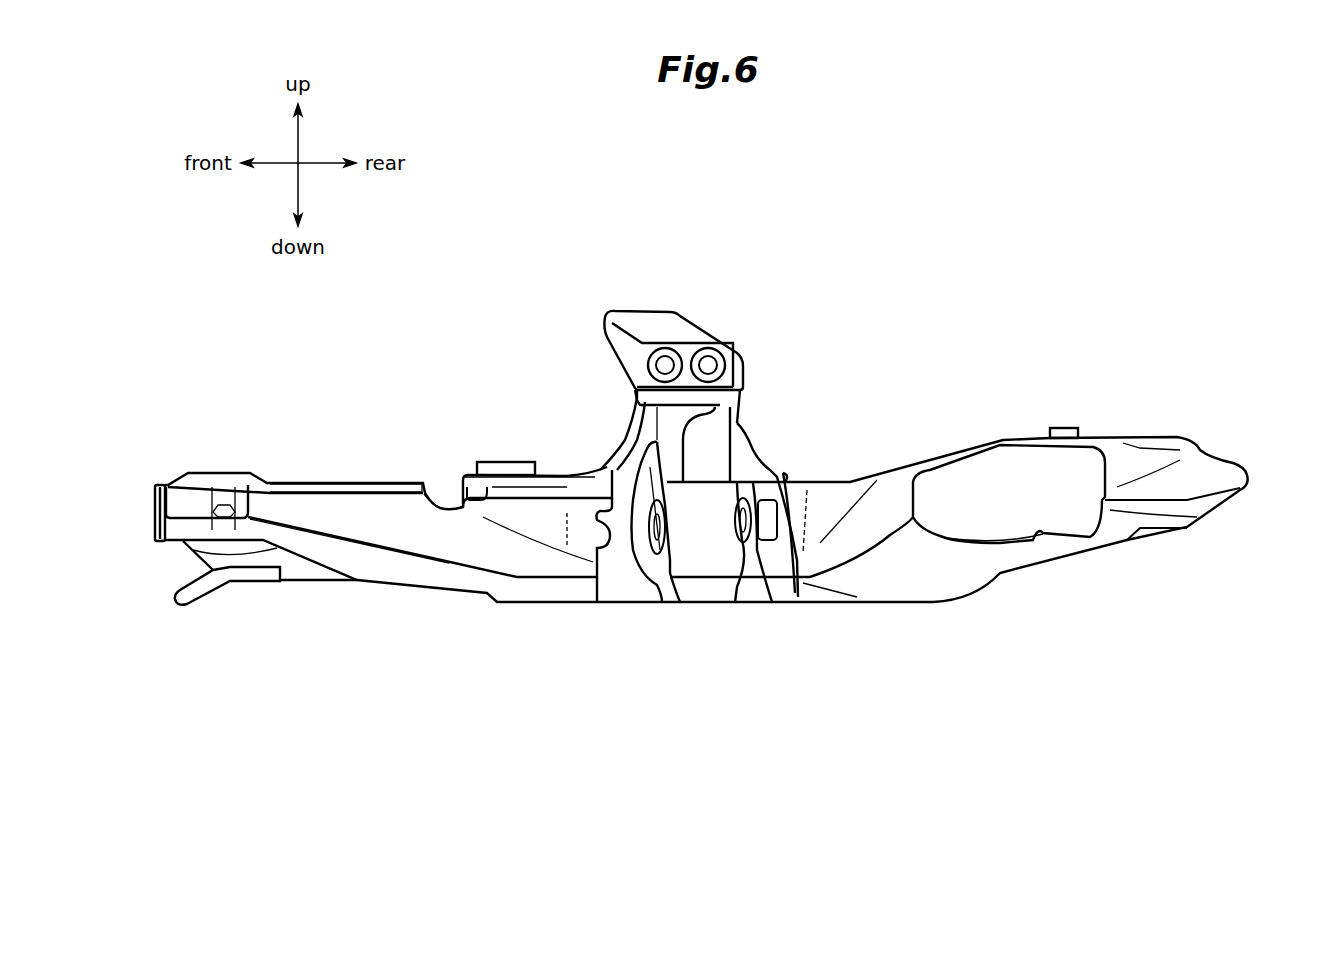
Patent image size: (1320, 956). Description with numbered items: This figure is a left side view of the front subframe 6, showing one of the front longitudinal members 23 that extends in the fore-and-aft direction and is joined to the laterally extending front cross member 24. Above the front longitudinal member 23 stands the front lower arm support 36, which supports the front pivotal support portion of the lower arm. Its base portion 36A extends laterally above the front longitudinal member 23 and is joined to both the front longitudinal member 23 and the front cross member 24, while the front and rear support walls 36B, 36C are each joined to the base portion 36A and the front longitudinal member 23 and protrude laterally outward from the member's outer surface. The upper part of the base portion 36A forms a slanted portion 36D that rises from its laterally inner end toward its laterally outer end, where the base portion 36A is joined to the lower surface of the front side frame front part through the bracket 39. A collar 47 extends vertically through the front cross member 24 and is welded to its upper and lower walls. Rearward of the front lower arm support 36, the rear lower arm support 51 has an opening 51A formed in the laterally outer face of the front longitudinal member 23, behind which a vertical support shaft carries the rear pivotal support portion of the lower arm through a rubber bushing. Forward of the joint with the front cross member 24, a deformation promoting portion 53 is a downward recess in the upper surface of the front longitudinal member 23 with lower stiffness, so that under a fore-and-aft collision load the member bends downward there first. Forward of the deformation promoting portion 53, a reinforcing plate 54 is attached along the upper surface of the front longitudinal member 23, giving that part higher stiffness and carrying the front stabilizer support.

The front subframe 6 is at (1135, 384).
The front longitudinal member 23 is at (400, 582).
The front cross member 24 is at (548, 477).
The front lower arm support 36 is at (674, 606).
The base portion 36A is at (722, 423).
The front support wall 36B is at (620, 593).
The rear support wall 36C is at (768, 592).
The slanted portion 36D is at (627, 420).
The bracket 39 is at (678, 328).
The collar 47 is at (488, 465).
The rear lower arm support 51 is at (1055, 427).
The opening 51A is at (983, 537).
The deformation promoting portion 53 is at (440, 506).
The reinforcing plate 54 is at (350, 488).